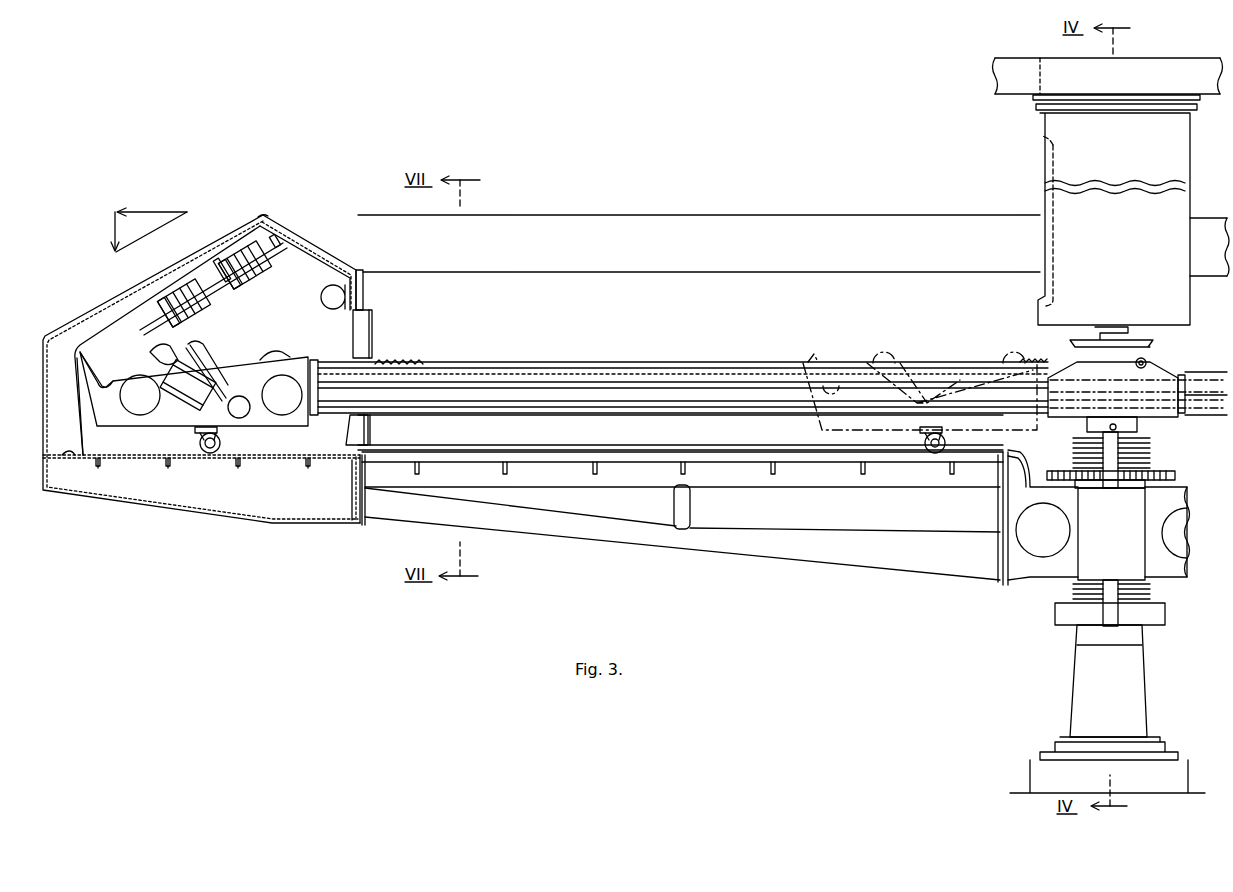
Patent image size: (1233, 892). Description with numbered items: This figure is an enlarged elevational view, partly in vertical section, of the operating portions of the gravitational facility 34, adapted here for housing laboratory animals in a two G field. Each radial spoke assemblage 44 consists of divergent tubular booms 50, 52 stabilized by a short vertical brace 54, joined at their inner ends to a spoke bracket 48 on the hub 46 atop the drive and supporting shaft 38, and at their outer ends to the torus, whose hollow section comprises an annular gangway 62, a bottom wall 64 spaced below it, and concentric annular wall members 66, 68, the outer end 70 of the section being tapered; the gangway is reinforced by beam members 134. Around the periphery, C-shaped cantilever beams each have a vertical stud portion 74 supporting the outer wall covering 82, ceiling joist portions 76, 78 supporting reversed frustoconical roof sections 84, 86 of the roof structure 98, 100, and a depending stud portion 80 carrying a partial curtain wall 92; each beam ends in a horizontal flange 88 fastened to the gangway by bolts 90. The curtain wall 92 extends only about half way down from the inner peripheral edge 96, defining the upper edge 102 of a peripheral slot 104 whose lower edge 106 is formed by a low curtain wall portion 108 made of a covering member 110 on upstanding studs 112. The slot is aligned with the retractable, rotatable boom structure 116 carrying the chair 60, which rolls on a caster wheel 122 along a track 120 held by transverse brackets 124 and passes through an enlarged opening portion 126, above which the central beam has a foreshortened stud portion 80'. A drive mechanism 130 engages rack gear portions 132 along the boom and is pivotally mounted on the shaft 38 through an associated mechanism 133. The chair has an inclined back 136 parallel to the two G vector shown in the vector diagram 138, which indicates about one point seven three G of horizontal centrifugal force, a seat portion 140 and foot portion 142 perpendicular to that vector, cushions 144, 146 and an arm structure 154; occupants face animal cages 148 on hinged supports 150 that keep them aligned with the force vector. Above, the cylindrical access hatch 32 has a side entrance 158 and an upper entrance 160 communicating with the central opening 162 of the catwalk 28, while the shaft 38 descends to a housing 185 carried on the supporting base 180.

The catwalk 28 is at (1012, 94).
The access hatch 32 is at (1229, 150).
The gravitational facility 34 is at (318, 528).
The drive and supporting shaft 38 is at (1074, 592).
The spoke assemblage 44 is at (726, 548).
The hub 46 is at (1121, 525).
The spoke bracket 48 is at (1028, 575).
The tubular boom 50 is at (608, 540).
The tubular boom 52 is at (640, 482).
The vertical brace 54 is at (692, 503).
The chair structure 60 is at (334, 355).
The annular gangway structure 62 is at (225, 458).
The bottom wall structure 64 is at (245, 521).
The annular wall member 66 is at (48, 472).
The annular wall member 68 is at (352, 496).
The tapered outer end 70 is at (178, 510).
The vertical stud portion 74 is at (78, 412).
The ceiling joist portion 76 is at (98, 330).
The ceiling joist portion 78 is at (330, 264).
The depending second stud portion 80 is at (378, 291).
The foreshortened second stud portion 80' is at (328, 308).
The outer wall covering 82 is at (52, 428).
The frustoconical roof section 84 is at (90, 308).
The frustoconical roof section 86 is at (734, 258).
The horizontal flange portion 88 is at (68, 452).
The bolts 90 is at (80, 442).
The partial curtain wall 92 is at (532, 334).
The inner peripheral edge 96 is at (552, 273).
The roof structure 98 is at (256, 216).
The roof structure 100 is at (511, 258).
The upper edge of slot 102 is at (583, 362).
The inner peripheral slot 104 is at (698, 418).
The lower edge of slot 106 is at (622, 418).
The curtain wall portion 108 is at (530, 438).
The covering member 110 is at (370, 430).
The upstanding stud members 112 is at (352, 432).
The boom structure 116 is at (656, 380).
The track 120 is at (851, 483).
The caster mounted wheel 122 is at (220, 443).
The transversely extending brackets 124 is at (590, 466).
The chair-accommodating opening portion 126 is at (365, 338).
The drive mechanism 130 is at (1156, 362).
The rack gear portions 132 is at (406, 360).
The pivot bolt 133 is at (1118, 427).
The beam members 134 is at (308, 462).
The back portion 136 is at (256, 358).
The vector diagram 138 is at (185, 212).
The seat portion 140 is at (172, 352).
The foot portion 142 is at (96, 352).
The cushion 144 is at (200, 368).
The cushion 146 is at (204, 352).
The animal cages 148 is at (172, 313).
The hinged support 150 is at (222, 280).
The arm structure 154 is at (210, 360).
The side entrance 158 is at (1046, 150).
The upper entrance 160 is at (1152, 106).
The central opening 162 is at (1058, 82).
The supporting base 180 is at (1030, 772).
The pedestal column 185 is at (1075, 670).